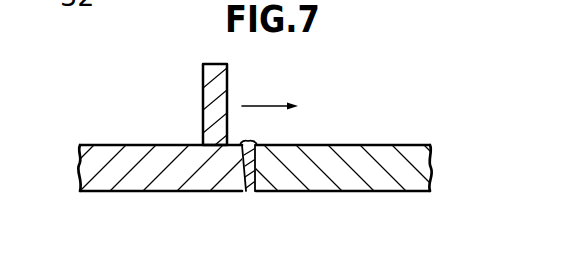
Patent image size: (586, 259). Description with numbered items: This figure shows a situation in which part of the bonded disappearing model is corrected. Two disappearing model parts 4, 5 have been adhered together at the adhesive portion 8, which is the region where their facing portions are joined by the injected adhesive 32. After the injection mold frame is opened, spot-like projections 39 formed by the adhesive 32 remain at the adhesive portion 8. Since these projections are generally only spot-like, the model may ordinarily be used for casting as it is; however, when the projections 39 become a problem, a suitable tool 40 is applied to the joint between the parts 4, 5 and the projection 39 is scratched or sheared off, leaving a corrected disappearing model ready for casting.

The disappearing model part 4 is at (80, 170).
The disappearing model part 5 is at (429, 170).
The adhesive portion 8 is at (286, 206).
The adhesive 32 is at (258, 192).
The projection 39 is at (246, 143).
The tool 40 is at (228, 70).